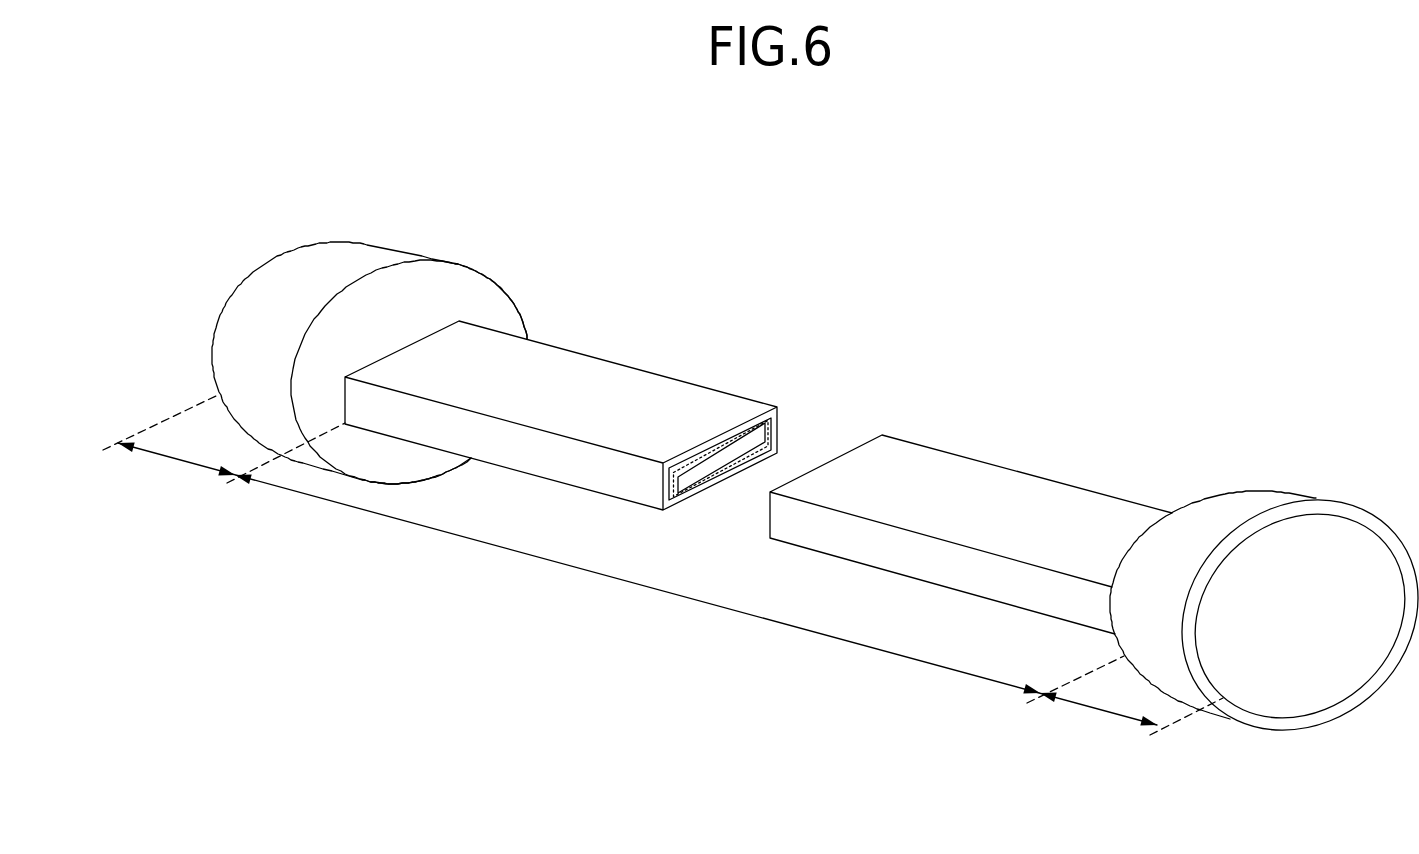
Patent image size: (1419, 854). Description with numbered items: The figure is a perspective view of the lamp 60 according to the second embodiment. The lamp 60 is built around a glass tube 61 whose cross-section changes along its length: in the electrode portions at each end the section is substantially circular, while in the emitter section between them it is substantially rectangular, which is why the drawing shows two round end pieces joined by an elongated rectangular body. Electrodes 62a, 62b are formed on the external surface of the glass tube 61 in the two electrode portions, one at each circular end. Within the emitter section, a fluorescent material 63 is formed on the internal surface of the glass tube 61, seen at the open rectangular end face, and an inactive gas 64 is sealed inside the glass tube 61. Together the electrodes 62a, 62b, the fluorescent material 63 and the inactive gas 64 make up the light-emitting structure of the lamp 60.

The lamp 60 is at (716, 241).
The glass tube 61 is at (633, 380).
The electrode 62a is at (378, 250).
The electrode 62b is at (1277, 507).
The fluorescent material 63 is at (775, 427).
The inactive gas 64 is at (750, 442).